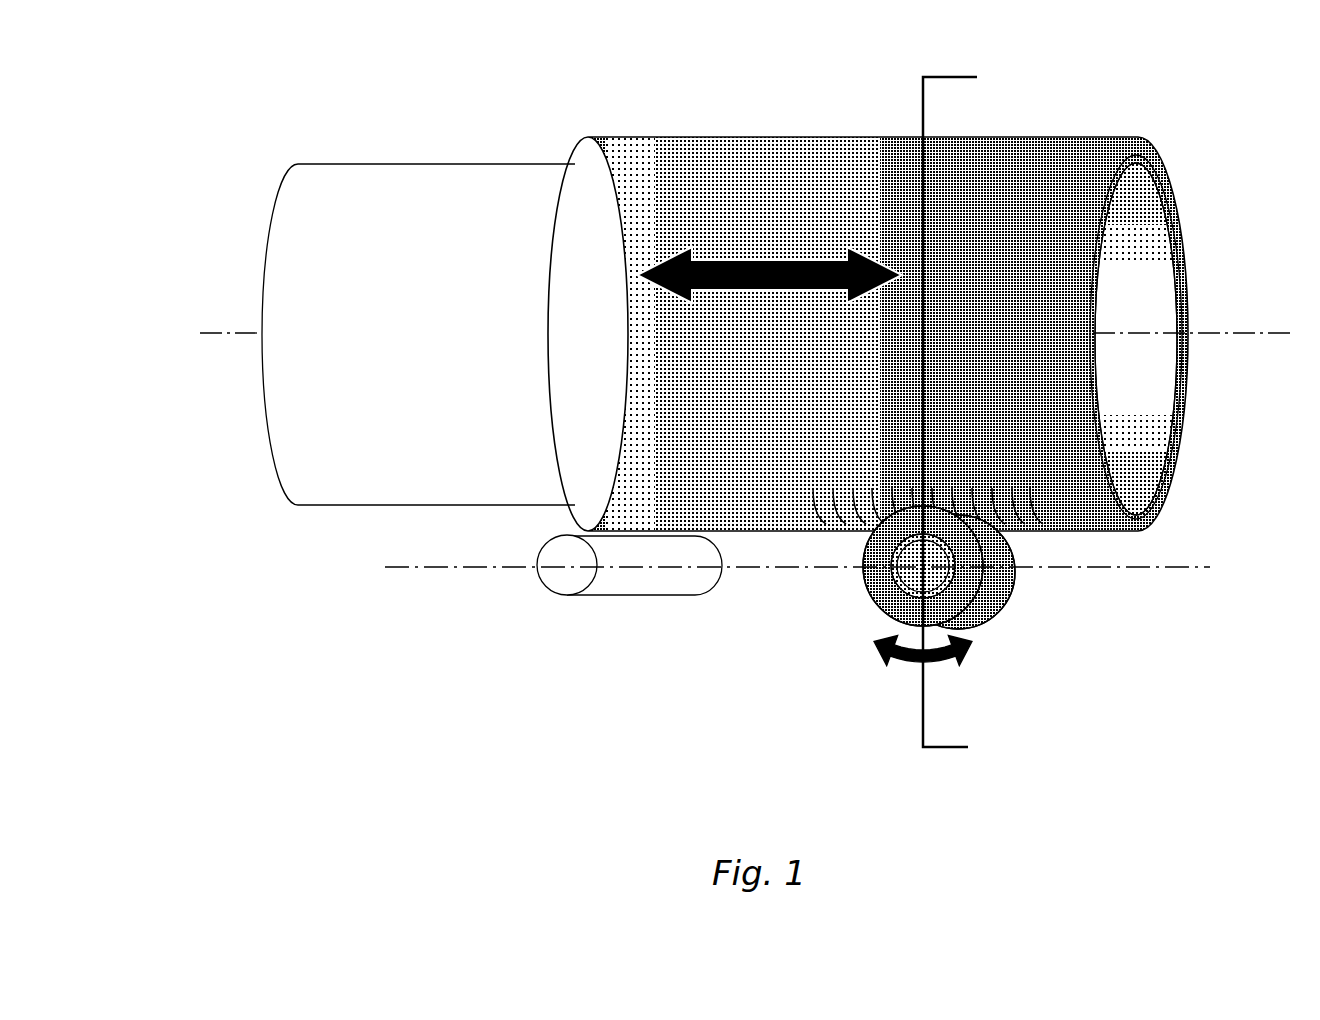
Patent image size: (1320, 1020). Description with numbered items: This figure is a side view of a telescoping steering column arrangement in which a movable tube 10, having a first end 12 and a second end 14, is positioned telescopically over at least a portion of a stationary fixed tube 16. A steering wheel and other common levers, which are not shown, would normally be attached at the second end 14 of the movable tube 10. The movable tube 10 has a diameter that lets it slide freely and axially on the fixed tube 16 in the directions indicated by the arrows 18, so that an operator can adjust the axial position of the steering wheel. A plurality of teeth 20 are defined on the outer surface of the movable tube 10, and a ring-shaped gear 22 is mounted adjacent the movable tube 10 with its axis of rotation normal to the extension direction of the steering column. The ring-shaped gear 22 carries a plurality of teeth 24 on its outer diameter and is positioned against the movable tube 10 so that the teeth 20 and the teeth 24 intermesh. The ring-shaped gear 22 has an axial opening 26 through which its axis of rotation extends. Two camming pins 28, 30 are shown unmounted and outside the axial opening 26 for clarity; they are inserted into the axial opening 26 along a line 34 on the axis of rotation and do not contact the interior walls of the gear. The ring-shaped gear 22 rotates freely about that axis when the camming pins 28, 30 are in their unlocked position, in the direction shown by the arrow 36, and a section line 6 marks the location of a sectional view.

The section line 6- 6 is at (965, 415).
The movable tube 10 is at (716, 160).
The first end 12 is at (577, 147).
The second end 14 is at (1152, 158).
The fixed tube 16 is at (393, 194).
The arrows 18 is at (769, 321).
The teeth 20 is at (1028, 530).
The ring-shaped gear 22 is at (887, 597).
The teeth 24 is at (862, 577).
The axial opening 26 is at (975, 622).
The camming pin 28 is at (718, 582).
The camming pin 30 is at (565, 580).
The line 34 is at (765, 568).
The arrow 36 is at (916, 686).